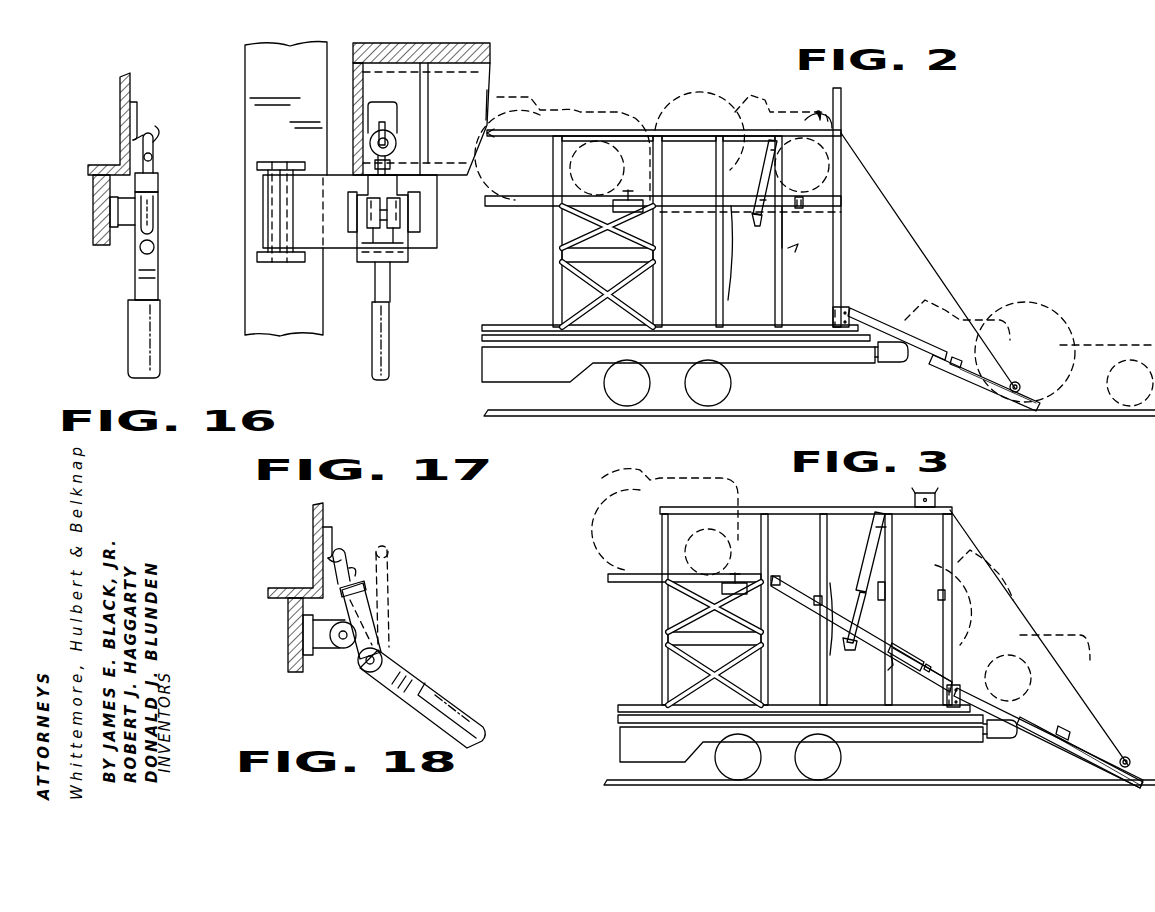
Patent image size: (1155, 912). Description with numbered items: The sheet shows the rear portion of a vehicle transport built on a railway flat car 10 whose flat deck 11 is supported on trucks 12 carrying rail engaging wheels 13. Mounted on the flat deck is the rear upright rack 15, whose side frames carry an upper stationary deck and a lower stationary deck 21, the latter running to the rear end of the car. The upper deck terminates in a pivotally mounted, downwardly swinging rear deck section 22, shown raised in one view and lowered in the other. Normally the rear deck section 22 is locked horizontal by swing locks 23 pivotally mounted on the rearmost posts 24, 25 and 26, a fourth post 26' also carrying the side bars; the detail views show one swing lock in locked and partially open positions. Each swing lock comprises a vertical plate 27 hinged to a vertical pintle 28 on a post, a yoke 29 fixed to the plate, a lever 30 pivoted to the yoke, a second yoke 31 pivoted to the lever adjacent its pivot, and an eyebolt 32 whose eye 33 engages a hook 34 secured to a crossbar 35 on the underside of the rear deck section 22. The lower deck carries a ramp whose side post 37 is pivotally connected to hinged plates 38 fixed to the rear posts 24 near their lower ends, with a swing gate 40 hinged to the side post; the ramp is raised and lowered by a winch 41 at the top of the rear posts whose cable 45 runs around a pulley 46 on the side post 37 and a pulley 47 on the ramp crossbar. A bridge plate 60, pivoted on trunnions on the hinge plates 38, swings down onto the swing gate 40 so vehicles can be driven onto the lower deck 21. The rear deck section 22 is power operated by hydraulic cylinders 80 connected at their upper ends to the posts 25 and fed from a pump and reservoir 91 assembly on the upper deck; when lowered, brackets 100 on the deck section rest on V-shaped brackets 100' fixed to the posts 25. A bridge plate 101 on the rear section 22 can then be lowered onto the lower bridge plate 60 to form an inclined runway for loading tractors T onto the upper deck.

In FIG. 2, the railway flat car 10 is at (500, 360).
In FIG. 3, the railway flat car 10 is at (615, 732).
In FIG. 2, the flat deck 11 is at (500, 338).
In FIG. 3, the flat deck 11 is at (615, 718).
In FIG. 2, the trucks 12 is at (670, 392).
In FIG. 3, the trucks 12 is at (780, 765).
In FIG. 2, the rail engaging wheels 13 is at (730, 384).
In FIG. 3, the rail engaging wheels 13 is at (828, 760).
In FIG. 2, the rear rack 15 is at (594, 128).
In FIG. 3, the rear rack 15 is at (720, 502).
In FIG. 2, the lower stationary deck 21 is at (525, 322).
In FIG. 3, the lower stationary deck 21 is at (645, 702).
In FIG. 17, the rear deck section 22 is at (490, 50).
In FIG. 2, the rear deck section 22 is at (708, 200).
In FIG. 3, the rear deck section 22 is at (800, 612).
In FIG. 16, the swing locks 23 is at (92, 210).
In FIG. 17, the swing locks 23 is at (352, 258).
In FIG. 18, the swing locks 23 is at (286, 622).
In FIG. 2, the swing locks 23 is at (718, 220).
In FIG. 3, the swing locks 23 is at (822, 610).
In FIG. 2, the post 24 is at (838, 285).
In FIG. 3, the post 24 is at (940, 658).
In FIG. 17, the post 25 is at (260, 52).
In FIG. 2, the post 25 is at (785, 300).
In FIG. 3, the post 25 is at (890, 672).
In FIG. 2, the post 26 is at (663, 221).
In FIG. 3, the post 26 is at (780, 601).
In FIG. 2, the post 26' is at (608, 266).
In FIG. 3, the post 26' is at (716, 643).
In FIG. 16, the vertical plate 27 is at (100, 232).
In FIG. 17, the vertical plate 27 is at (420, 226).
In FIG. 18, the vertical plate 27 is at (300, 650).
In FIG. 17, the vertical pintle 28 is at (275, 222).
In FIG. 16, the yoke 29 is at (130, 226).
In FIG. 18, the yoke 29 is at (330, 648).
In FIG. 16, the lever 30 is at (150, 332).
In FIG. 17, the lever 30 is at (382, 325).
In FIG. 18, the lever 30 is at (412, 698).
In FIG. 16, the yoke 31 is at (152, 190).
In FIG. 17, the yoke 31 is at (408, 252).
In FIG. 18, the yoke 31 is at (362, 620).
In FIG. 16, the eyebolt 32 is at (158, 176).
In FIG. 17, the eyebolt 32 is at (392, 172).
In FIG. 18, the eyebolt 32 is at (366, 588).
In FIG. 16, the eye 33 is at (155, 152).
In FIG. 17, the eye 33 is at (397, 143).
In FIG. 18, the eye 33 is at (385, 552).
In FIG. 16, the hook 34 is at (153, 134).
In FIG. 17, the hook 34 is at (383, 102).
In FIG. 18, the hook 34 is at (346, 556).
In FIG. 16, the crossbar 35 is at (122, 136).
In FIG. 17, the crossbar 35 is at (478, 96).
In FIG. 18, the crossbar 35 is at (315, 556).
In FIG. 2, the side post 37 is at (928, 354).
In FIG. 3, the side post 37 is at (1040, 735).
In FIG. 2, the hinged plates 38 is at (852, 308).
In FIG. 3, the hinged plates 38 is at (956, 705).
In FIG. 2, the swing gate 40 is at (978, 380).
In FIG. 3, the swing gate 40 is at (1085, 752).
In FIG. 2, the winch 41 is at (818, 113).
In FIG. 3, the winch 41 is at (930, 496).
In FIG. 2, the cable 45 is at (932, 252).
In FIG. 3, the cable 45 is at (1020, 608).
In FIG. 2, the pulley 46 is at (1020, 385).
In FIG. 3, the pulley 46 is at (1130, 760).
In FIG. 2, the pulley 47 is at (957, 355).
In FIG. 3, the pulley 47 is at (1073, 728).
In FIG. 2, the bridge plate 60 is at (883, 364).
In FIG. 3, the bridge plate 60 is at (995, 740).
In FIG. 2, the hydraulic cylinders 80 is at (764, 170).
In FIG. 3, the hydraulic cylinders 80 is at (872, 560).
In FIG. 2, the reservoir 91 is at (618, 212).
In FIG. 3, the reservoir 91 is at (730, 592).
In FIG. 2, the brackets 100 is at (812, 216).
In FIG. 3, the brackets 100 is at (905, 627).
In FIG. 2, the V-shaped brackets 100' is at (810, 274).
In FIG. 3, the V-shaped brackets 100' is at (910, 677).
In FIG. 2, the bridge plate 101 is at (841, 104).
In FIG. 3, the bridge plate 101 is at (960, 700).
In FIG. 2, the farm tractors T is at (752, 110).
In FIG. 3, the farm tractors T is at (682, 482).